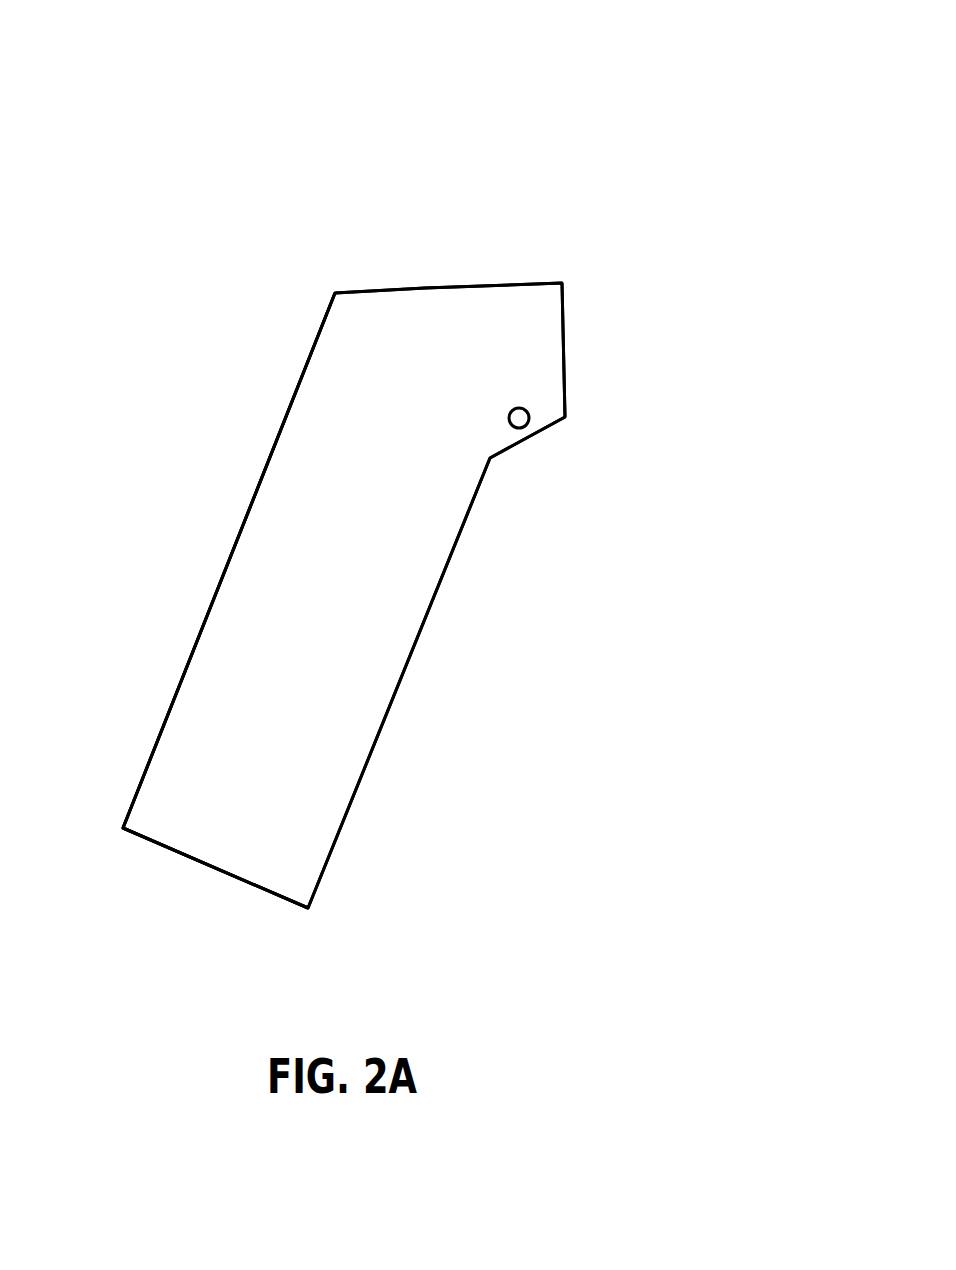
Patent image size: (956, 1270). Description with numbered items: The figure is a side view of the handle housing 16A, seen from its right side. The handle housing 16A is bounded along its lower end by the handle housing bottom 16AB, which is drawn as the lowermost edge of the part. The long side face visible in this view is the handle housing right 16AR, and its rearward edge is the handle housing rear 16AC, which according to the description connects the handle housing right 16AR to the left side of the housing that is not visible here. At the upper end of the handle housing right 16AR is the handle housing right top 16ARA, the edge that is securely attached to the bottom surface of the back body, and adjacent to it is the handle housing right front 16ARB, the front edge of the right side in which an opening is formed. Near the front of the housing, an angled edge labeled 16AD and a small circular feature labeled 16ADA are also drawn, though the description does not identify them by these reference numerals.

The handle housing 16A is at (393, 52).
The handle housing right 16AR is at (325, 562).
The handle housing rear 16AC is at (278, 430).
The handle housing bottom 16AB is at (192, 862).
The handle housing right top 16ARA is at (425, 288).
The handle housing right front 16ARB is at (563, 330).
The angled edge 16AD is at (517, 445).
The aperture 16ADA is at (519, 418).